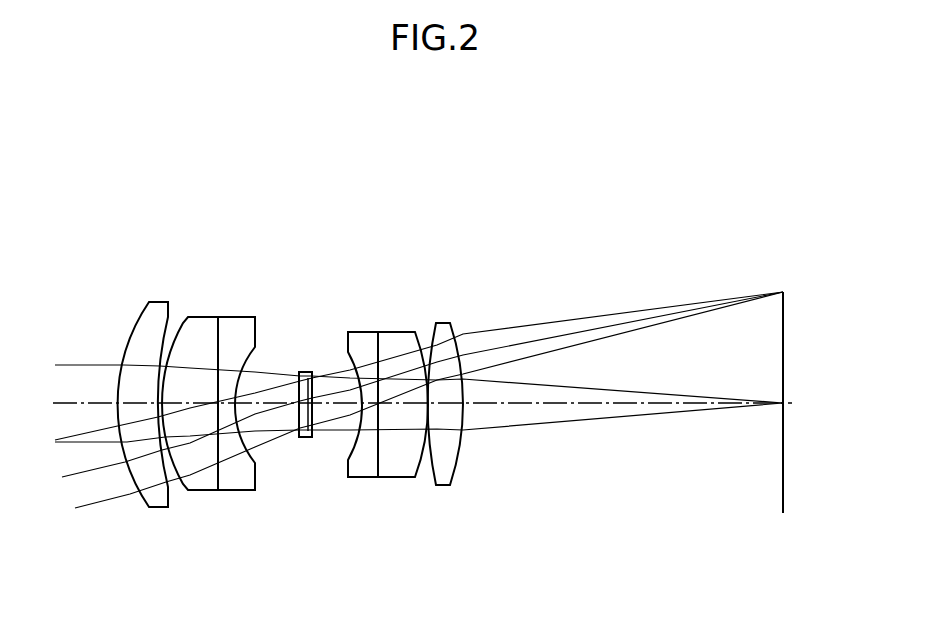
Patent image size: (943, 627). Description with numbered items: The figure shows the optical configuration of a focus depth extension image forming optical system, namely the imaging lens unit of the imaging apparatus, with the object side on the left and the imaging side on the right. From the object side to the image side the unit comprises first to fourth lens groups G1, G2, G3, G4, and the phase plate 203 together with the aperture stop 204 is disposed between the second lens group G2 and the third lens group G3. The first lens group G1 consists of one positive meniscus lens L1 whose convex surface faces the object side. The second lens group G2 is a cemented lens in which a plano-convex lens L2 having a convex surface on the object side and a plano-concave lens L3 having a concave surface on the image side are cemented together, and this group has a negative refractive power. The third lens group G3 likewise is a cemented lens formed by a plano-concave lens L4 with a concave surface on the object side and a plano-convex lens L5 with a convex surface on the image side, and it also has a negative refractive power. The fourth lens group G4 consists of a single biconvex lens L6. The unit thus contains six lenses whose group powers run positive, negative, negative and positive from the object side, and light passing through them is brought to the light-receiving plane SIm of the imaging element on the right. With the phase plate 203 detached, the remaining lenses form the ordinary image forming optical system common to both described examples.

The first lens group G1 is at (143, 329).
The second lens group G2 is at (268, 198).
The third lens group G3 is at (437, 198).
The fourth lens group G4 is at (457, 318).
The positive meniscus lens L1 is at (153, 312).
The plano-convex lens L2 is at (200, 330).
The plano-concave lens L3 is at (238, 332).
The plano-concave lens L4 is at (362, 342).
The plano-convex lens L5 is at (395, 342).
The biconvex lens L6 is at (443, 318).
The phase plate 203 is at (303, 438).
The aperture stop 204 is at (323, 358).
The light-receiving plane SIm is at (787, 303).